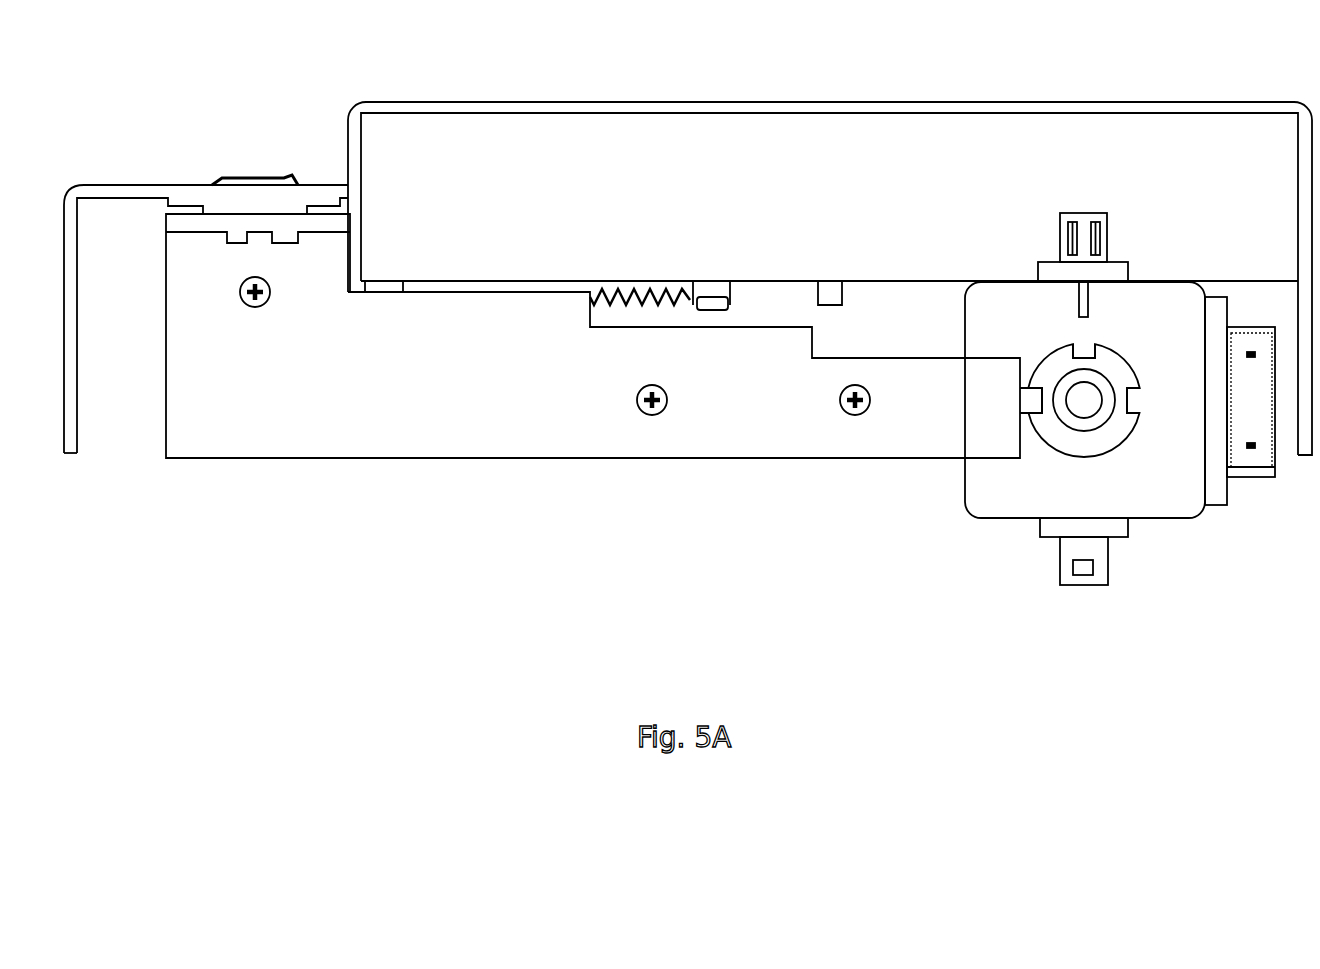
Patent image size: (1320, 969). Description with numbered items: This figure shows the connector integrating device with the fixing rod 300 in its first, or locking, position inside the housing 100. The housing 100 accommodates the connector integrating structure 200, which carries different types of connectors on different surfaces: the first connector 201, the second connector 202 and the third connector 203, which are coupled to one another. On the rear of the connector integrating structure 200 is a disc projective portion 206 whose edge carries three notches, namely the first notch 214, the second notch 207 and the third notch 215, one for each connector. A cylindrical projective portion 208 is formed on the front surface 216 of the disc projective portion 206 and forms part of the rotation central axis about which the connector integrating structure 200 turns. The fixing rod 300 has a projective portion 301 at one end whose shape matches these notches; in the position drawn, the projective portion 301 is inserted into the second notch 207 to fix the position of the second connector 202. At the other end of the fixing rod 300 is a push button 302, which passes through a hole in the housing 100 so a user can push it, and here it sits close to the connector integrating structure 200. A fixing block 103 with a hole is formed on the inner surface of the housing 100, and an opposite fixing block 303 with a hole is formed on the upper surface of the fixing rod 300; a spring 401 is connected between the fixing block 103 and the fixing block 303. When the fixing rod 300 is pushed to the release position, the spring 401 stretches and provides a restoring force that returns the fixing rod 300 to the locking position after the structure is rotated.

The housing 100 is at (952, 133).
The fixing block 103 is at (718, 293).
The connector integrating structure 200 is at (1173, 535).
The first connector 201 is at (1262, 457).
The second connector 202 is at (1082, 220).
The third connector 203 is at (1064, 582).
The disc projective portion 206 is at (1128, 443).
The second notch 207 is at (1030, 416).
The cylindrical projective portion 208 is at (1078, 422).
The first notch 214 is at (1084, 346).
The third notch 215 is at (1133, 398).
The front surface 216 is at (1117, 430).
The fixing rod 300 is at (482, 405).
The projective portion 301 is at (1033, 397).
The push button 302 is at (216, 178).
The fixing block 303 is at (522, 298).
The spring 401 is at (665, 290).